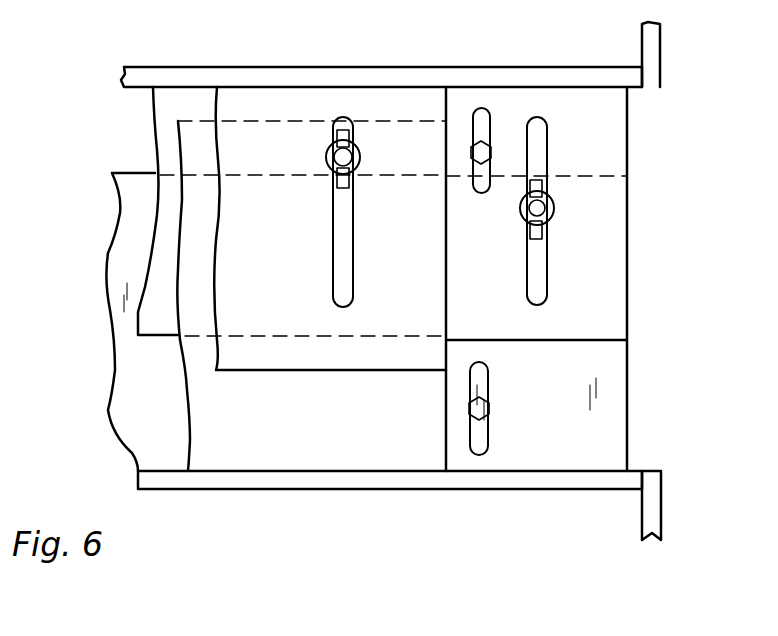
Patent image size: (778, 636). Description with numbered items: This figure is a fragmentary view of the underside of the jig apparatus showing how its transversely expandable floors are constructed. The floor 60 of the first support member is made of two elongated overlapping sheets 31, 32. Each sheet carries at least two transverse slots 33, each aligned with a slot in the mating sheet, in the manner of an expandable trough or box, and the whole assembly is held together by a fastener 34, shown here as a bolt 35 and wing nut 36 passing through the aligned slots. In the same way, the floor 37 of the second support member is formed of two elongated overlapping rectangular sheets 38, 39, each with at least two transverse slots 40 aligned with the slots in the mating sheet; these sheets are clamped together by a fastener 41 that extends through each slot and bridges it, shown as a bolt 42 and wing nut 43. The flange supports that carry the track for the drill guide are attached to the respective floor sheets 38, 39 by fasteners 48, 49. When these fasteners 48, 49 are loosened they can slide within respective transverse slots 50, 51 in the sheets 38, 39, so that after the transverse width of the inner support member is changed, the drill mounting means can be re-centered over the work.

The elongated overlapping sheet 31 is at (288, 226).
The elongated overlapping sheet 32 is at (288, 420).
The transverse slot 33 is at (345, 258).
The fastener 34 is at (334, 103).
The bolt 35 is at (328, 157).
The wing nut 36 is at (356, 158).
The floor of the second support member 37 is at (632, 268).
The elongated overlapping rectangular sheet 38 is at (612, 393).
The elongated overlapping rectangular sheet 39 is at (160, 119).
The transverse slot 40 is at (548, 285).
The fastener 41 is at (566, 194).
The bolt 42 is at (553, 207).
The wing nut 43 is at (545, 232).
The fastener 48 is at (487, 407).
The fastener 49 is at (485, 152).
The transverse slot 50 is at (483, 440).
The transverse slot 51 is at (478, 192).
The floor of the first support member 60 is at (316, 476).